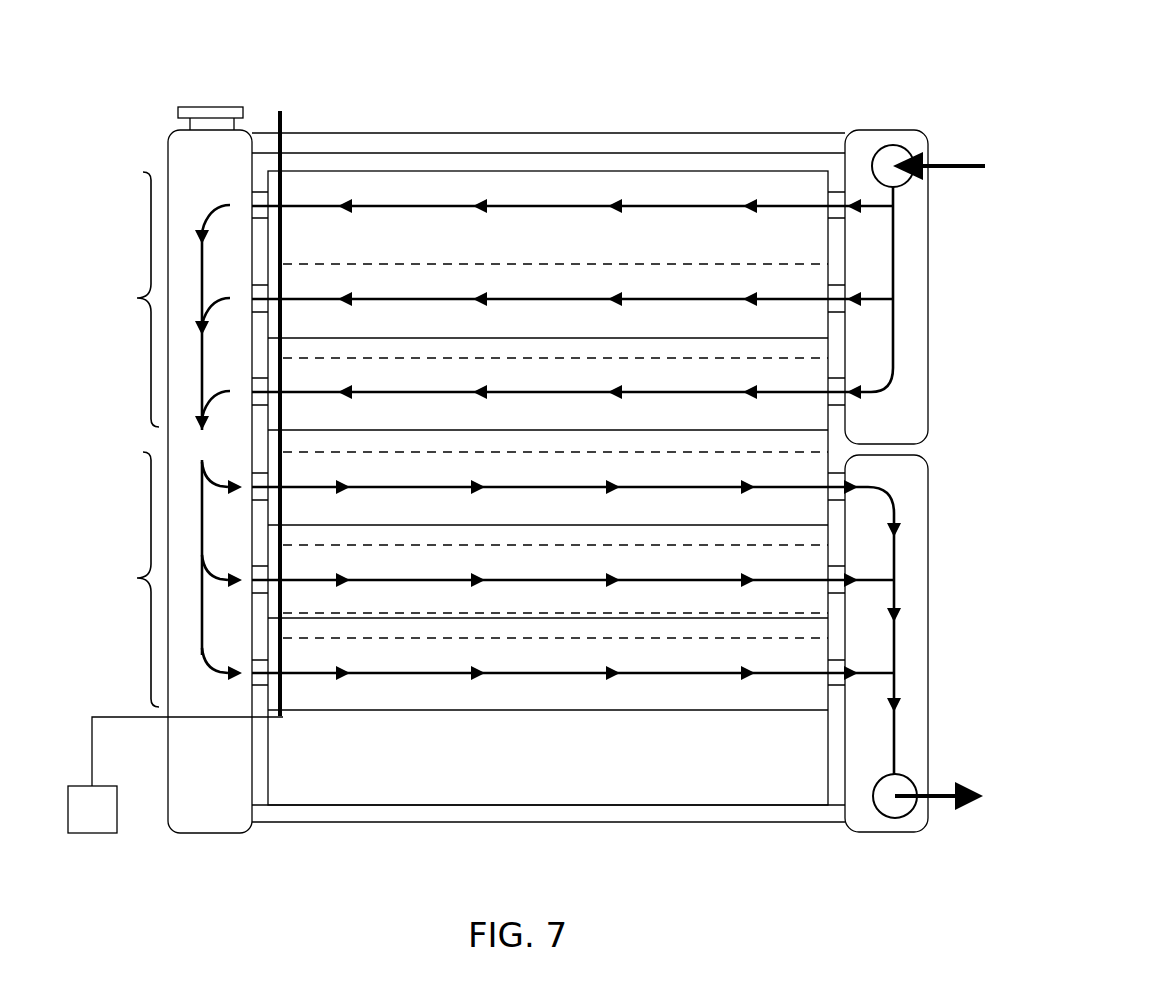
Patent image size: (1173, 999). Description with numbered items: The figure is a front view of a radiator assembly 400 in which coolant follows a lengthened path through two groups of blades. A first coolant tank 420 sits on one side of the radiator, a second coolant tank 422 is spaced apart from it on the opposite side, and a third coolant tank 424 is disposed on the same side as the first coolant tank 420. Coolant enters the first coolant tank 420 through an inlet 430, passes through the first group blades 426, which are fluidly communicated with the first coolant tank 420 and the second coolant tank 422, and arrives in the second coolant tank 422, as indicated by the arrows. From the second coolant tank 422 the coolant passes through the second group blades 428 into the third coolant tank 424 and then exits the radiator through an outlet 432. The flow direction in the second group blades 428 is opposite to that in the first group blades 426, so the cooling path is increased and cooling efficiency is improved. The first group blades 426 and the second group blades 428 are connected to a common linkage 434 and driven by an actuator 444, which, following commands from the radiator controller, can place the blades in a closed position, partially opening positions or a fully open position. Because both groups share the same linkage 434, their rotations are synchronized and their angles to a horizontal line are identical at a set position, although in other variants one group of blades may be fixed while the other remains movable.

The radiator assembly 400 is at (843, 66).
The first coolant tank 420 is at (918, 269).
The second coolant tank 422 is at (178, 739).
The third coolant tank 424 is at (918, 659).
The first group blades 426 is at (140, 300).
The second group blades 428 is at (140, 580).
The inlet 430 is at (892, 148).
The outlet 432 is at (893, 813).
The linkage 434 is at (283, 114).
The actuator 444 is at (103, 784).